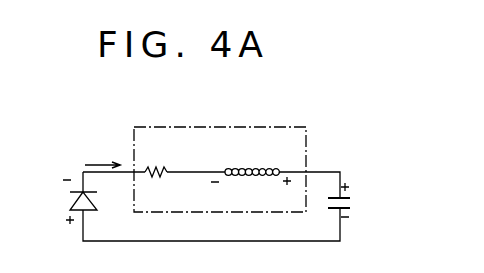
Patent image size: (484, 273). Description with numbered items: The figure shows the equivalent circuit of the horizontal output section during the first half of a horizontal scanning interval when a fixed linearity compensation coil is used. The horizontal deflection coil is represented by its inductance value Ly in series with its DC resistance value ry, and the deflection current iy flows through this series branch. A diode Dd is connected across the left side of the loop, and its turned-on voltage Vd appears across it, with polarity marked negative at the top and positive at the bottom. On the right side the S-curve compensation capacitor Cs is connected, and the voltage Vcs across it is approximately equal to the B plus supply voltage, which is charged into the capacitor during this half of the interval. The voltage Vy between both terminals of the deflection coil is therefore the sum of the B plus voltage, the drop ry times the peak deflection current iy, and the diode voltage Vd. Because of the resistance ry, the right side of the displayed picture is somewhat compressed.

The diode Dd is at (97, 202).
The turned-on voltage of the diode Vd is at (55, 202).
The deflection current iy is at (101, 154).
The DC resistance value ry is at (155, 160).
The inductance value Ly is at (252, 159).
The voltage between both terminals of the horizontal deflection coil Vy is at (251, 192).
The compensation capacitor Cs is at (329, 215).
The voltage across the compensation capacitor Vcs is at (387, 200).